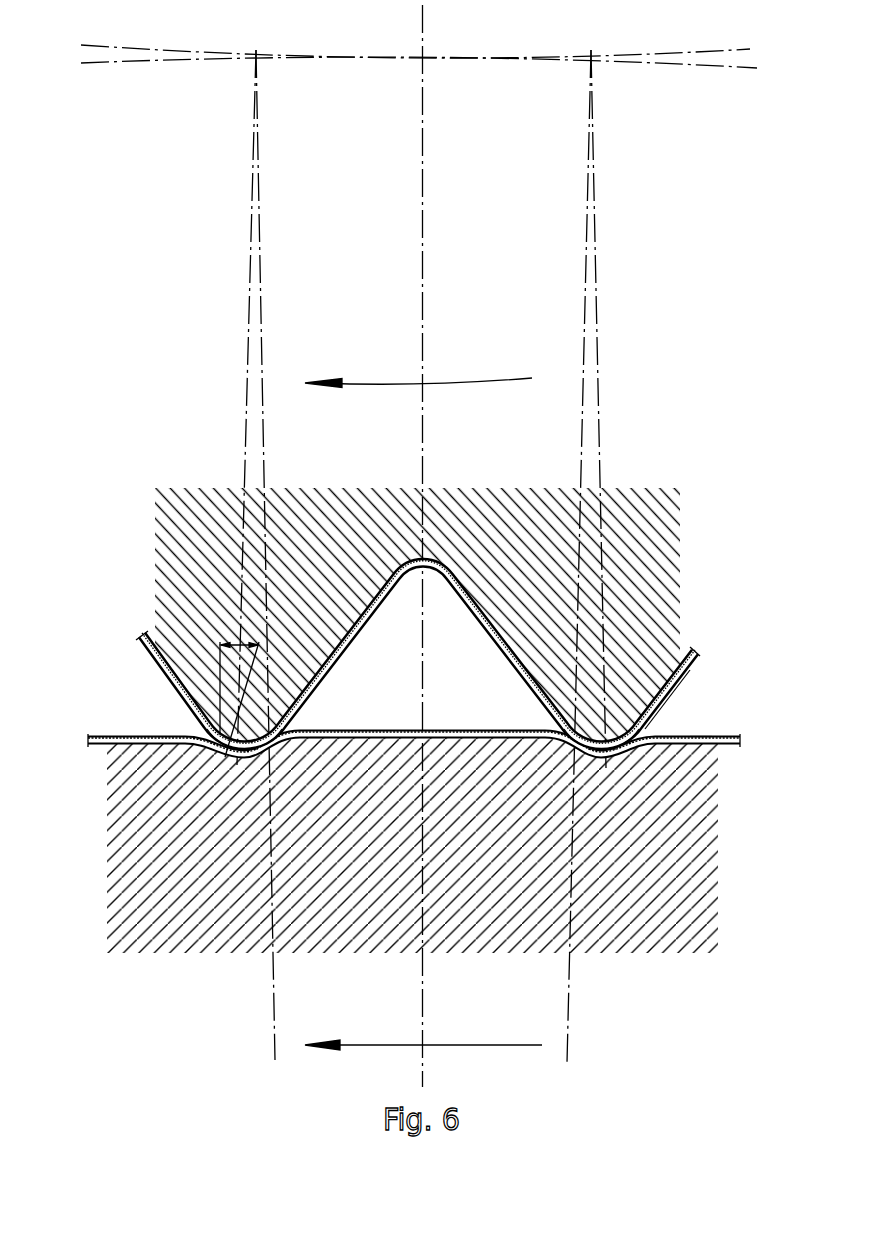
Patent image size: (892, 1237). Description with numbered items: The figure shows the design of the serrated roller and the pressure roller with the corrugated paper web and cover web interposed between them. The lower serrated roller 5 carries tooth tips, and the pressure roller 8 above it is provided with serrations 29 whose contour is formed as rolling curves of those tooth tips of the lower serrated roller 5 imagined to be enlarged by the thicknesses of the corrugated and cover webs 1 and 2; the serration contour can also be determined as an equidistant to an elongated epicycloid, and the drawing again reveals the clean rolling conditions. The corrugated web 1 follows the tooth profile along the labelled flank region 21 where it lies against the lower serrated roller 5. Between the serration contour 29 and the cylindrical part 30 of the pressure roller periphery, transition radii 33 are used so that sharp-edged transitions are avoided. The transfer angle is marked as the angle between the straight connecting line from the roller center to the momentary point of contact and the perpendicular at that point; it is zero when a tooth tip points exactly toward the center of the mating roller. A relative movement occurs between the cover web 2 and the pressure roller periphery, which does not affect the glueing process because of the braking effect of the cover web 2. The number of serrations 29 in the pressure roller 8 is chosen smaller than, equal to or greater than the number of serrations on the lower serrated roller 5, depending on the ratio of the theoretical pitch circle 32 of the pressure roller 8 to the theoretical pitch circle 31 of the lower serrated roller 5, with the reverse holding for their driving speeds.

The corrugated web 1 is at (143, 641).
The cover web 2 is at (103, 734).
The lower serrated roller 5 is at (520, 550).
The pressure roller 8 is at (492, 911).
The inclined flank of corrugation 21 is at (195, 703).
The serrations 29 is at (294, 744).
The cylindrical part 30 is at (700, 734).
The theoretical pitch circle 31 is at (689, 50).
The theoretical pitch circle 32 is at (683, 63).
The transition radii 33 is at (322, 730).